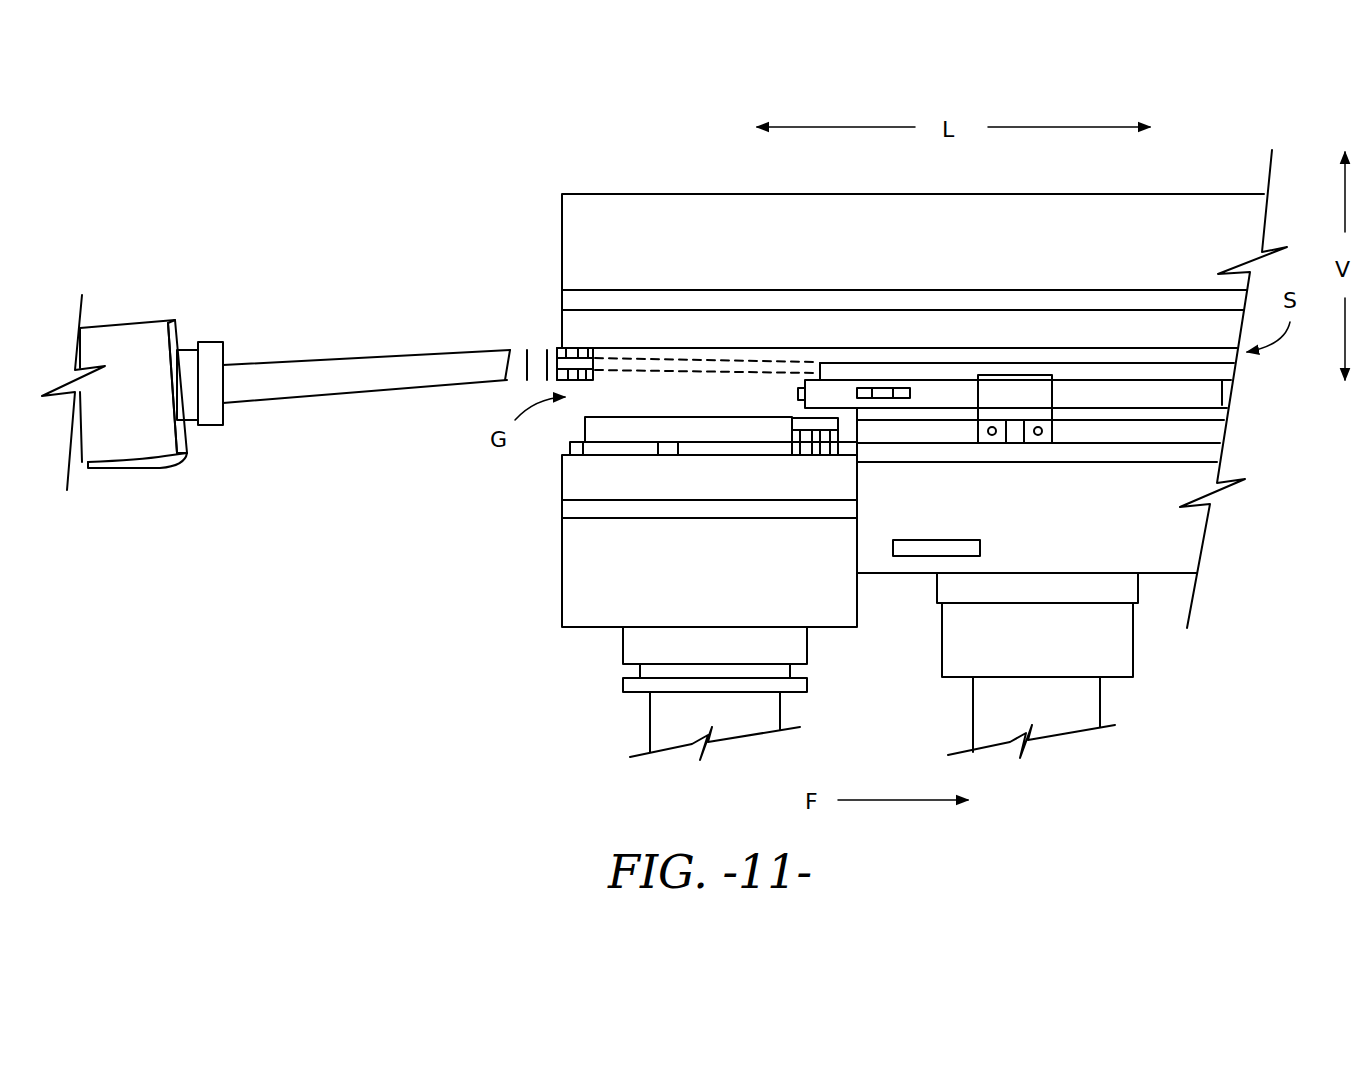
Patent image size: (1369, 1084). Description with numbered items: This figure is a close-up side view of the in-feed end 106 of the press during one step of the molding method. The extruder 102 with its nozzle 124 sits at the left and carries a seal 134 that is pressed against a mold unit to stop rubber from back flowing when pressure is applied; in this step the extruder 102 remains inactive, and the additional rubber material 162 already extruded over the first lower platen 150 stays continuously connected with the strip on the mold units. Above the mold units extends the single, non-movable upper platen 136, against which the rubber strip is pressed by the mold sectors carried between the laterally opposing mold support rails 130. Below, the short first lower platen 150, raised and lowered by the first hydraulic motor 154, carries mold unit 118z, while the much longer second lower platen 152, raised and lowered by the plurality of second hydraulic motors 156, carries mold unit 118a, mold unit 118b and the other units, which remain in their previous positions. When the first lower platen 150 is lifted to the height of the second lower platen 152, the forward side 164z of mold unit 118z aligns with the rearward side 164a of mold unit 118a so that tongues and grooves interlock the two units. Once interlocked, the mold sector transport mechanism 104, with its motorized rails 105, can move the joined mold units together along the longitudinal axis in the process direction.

The extruder 102 is at (125, 340).
The nozzle 124 is at (370, 378).
The seal 134 is at (537, 357).
The in-feed end 106 is at (535, 316).
The upper platen 136 is at (603, 212).
The mold support rails 130 is at (942, 367).
The additional rubber material 162 is at (702, 378).
The rearward side of mold unit 164a is at (822, 372).
The mold unit 118a is at (868, 362).
The mold unit 118b is at (1037, 375).
The motorized rails 105 is at (1178, 392).
The mold sector transport mechanism 104 is at (1230, 392).
The second lower platen 152 is at (1182, 537).
The second hydraulic motors 156 is at (1117, 652).
The first lower platen 150 is at (573, 588).
The first hydraulic motor 154 is at (665, 718).
The mold unit 118z is at (583, 430).
The forward side of mold unit 164z is at (792, 428).